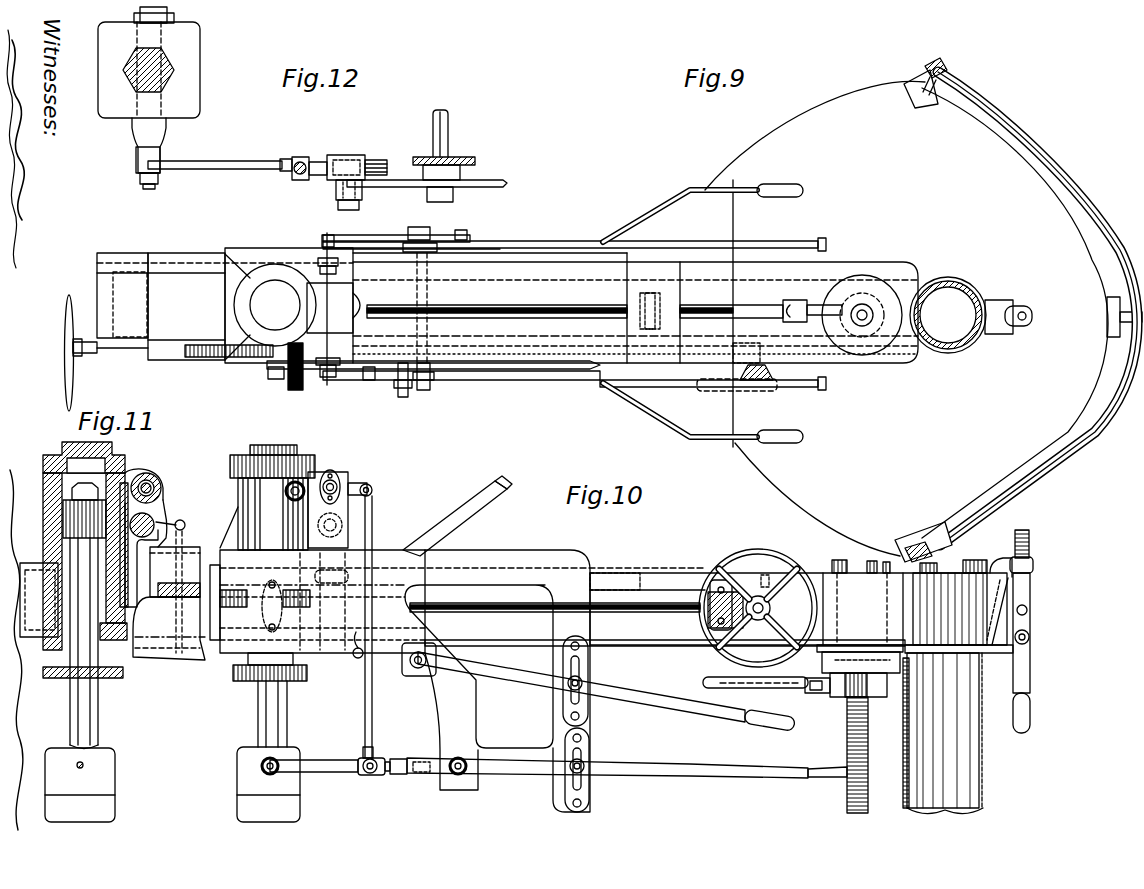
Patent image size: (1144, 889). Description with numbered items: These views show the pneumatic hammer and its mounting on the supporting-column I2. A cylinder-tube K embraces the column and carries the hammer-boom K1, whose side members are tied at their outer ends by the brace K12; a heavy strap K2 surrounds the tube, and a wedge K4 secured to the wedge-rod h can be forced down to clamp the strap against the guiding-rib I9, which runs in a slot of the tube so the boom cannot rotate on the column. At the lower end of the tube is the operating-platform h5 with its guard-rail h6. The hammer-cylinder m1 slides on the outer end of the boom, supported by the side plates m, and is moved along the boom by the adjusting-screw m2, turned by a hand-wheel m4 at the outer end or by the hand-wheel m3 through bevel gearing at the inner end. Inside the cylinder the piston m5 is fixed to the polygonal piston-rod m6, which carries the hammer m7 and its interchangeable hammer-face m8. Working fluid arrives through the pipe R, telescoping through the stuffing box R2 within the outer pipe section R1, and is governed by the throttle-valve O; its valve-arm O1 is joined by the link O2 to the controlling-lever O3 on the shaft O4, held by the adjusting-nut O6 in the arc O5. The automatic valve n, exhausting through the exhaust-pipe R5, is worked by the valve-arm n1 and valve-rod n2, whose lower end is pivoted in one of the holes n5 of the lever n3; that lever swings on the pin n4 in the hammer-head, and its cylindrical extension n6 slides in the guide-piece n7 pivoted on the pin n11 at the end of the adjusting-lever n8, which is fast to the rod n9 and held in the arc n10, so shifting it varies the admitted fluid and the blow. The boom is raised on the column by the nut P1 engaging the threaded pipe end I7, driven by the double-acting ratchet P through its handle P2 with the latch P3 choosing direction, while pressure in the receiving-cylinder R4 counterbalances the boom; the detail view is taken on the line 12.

In FIG. 11, the automatic valve n is at (158, 478).
In FIG. 10, the valve-arm n1 is at (355, 487).
In FIG. 12, the valve-rod n2 is at (303, 164).
In FIG. 10, the valve-rod n2 is at (373, 494).
In FIG. 12, the lever n3 is at (226, 167).
In FIG. 10, the lever n3 is at (318, 760).
In FIG. 12, the pin n4 is at (153, 161).
In FIG. 10, the pin n4 is at (278, 772).
In FIG. 10, the series of holes n5 is at (360, 776).
In FIG. 12, the cylindrical extension n6 is at (377, 163).
In FIG. 12, the guide-piece n7 is at (346, 158).
In FIG. 12, the adjusting-lever n8 is at (378, 188).
In FIG. 9, the adjusting-lever n8 is at (690, 241).
In FIG. 10, the adjusting-lever n8 is at (504, 775).
In FIG. 12, the rod n9 is at (447, 140).
In FIG. 10, the rod n9 is at (458, 776).
In FIG. 10, the arc n10 is at (590, 760).
In FIG. 12, the pin n11 is at (343, 205).
In FIG. 10, the pin n11 is at (400, 776).
In FIG. 9, the side plates m is at (538, 372).
In FIG. 10, the side plates m is at (505, 558).
In FIG. 10, the hammer-cylinder m1 is at (268, 497).
In FIG. 11, the hammer-cylinder m1 is at (68, 498).
In FIG. 9, the adjusting-screw m2 is at (556, 348).
In FIG. 10, the adjusting-screw m2 is at (522, 606).
In FIG. 9, the hand-wheel m3 is at (791, 390).
In FIG. 10, the hand-wheel m3 is at (742, 558).
In FIG. 9, the hand-wheel m4 is at (64, 352).
In FIG. 10, the piston m5 is at (270, 600).
In FIG. 11, the piston m5 is at (64, 530).
In FIG. 11, the piston-rod m6 is at (78, 697).
In FIG. 10, the hammer m7 is at (237, 770).
In FIG. 11, the hammer m7 is at (110, 768).
In FIG. 10, the hammer-face m8 is at (237, 800).
In FIG. 11, the hammer-face m8 is at (110, 798).
In FIG. 11, the throttle-valve O is at (157, 517).
In FIG. 10, the valve-arm O1 is at (349, 522).
In FIG. 11, the valve-arm O1 is at (186, 525).
In FIG. 10, the link O2 is at (357, 659).
In FIG. 11, the link O2 is at (184, 541).
In FIG. 9, the controlling-lever O3 is at (668, 202).
In FIG. 10, the controlling-lever O3 is at (392, 662).
In FIG. 10, the shaft O4 is at (417, 670).
In FIG. 10, the arc O5 is at (588, 697).
In FIG. 10, the adjusting-nut O6 is at (588, 684).
In FIG. 9, the pipe R is at (497, 300).
In FIG. 11, the pipe R is at (176, 600).
In FIG. 9, the outer section of pipe R1 is at (716, 306).
In FIG. 9, the stuffing box R2 is at (641, 300).
In FIG. 9, the receiving-cylinder R4 is at (870, 302).
In FIG. 10, the exhaust-pipe R5 is at (303, 485).
In FIG. 9, the cylinder-tube K is at (968, 342).
In FIG. 10, the cylinder-tube K is at (968, 730).
In FIG. 9, the hammer-boom K1 is at (608, 252).
In FIG. 10, the hammer-boom K1 is at (657, 640).
In FIG. 9, the strap K2 is at (946, 356).
In FIG. 10, the strap K2 is at (956, 630).
In FIG. 10, the wedge K4 is at (1030, 566).
In FIG. 9, the brace K12 is at (122, 297).
In FIG. 10, the double-acting ratchet P is at (848, 694).
In FIG. 10, the nut P1 is at (830, 666).
In FIG. 10, the operating-handle P2 is at (760, 690).
In FIG. 10, the latch P3 is at (818, 692).
In FIG. 9, the supporting-column I2 is at (962, 282).
In FIG. 10, the supporting-column I2 is at (978, 798).
In FIG. 10, the upper end of supply-pipe I7 is at (845, 798).
In FIG. 9, the guiding fin or rib I9 is at (995, 300).
In FIG. 10, the guiding fin or rib I9 is at (978, 762).
In FIG. 10, the wedge-rod h is at (1028, 540).
In FIG. 9, the operating-platform h5 is at (906, 318).
In FIG. 9, the guard-rail h6 is at (1060, 465).
In FIG. 10, the section line 12 is at (262, 735).